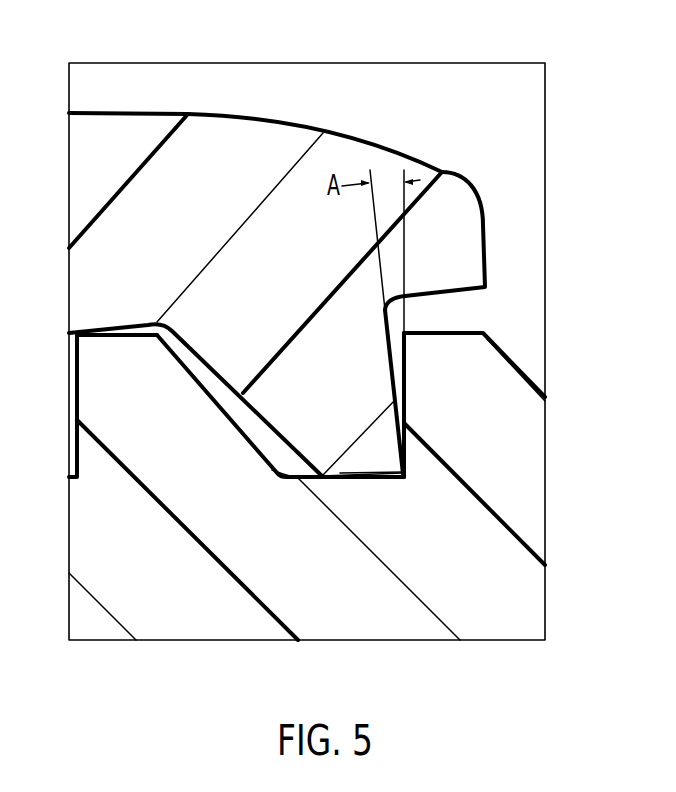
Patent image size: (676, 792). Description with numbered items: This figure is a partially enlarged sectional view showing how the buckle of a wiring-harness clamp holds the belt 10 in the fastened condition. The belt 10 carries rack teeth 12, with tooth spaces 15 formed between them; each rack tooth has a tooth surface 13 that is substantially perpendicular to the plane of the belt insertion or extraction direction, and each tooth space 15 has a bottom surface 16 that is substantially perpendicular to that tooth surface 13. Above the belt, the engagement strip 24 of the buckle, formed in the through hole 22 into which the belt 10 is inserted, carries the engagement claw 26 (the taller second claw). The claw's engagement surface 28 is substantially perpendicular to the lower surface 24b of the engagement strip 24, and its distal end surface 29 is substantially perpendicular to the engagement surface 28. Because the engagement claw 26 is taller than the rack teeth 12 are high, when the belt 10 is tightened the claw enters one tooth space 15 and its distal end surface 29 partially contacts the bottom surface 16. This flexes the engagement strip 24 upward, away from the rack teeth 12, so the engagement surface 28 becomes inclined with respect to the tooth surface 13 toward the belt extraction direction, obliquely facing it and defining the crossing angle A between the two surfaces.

The belt 10 is at (341, 608).
The rack teeth 12 is at (103, 387).
The tooth surface 13 is at (396, 373).
The tooth spaces 15 is at (238, 412).
The bottom surface 16 is at (289, 475).
The through hole 22 is at (123, 329).
The engagement strip 24 is at (267, 138).
The lower surface 24b is at (457, 290).
The engagement claw 26 is at (431, 420).
The engagement surface 28 is at (398, 355).
The distal end surface 29 is at (385, 480).